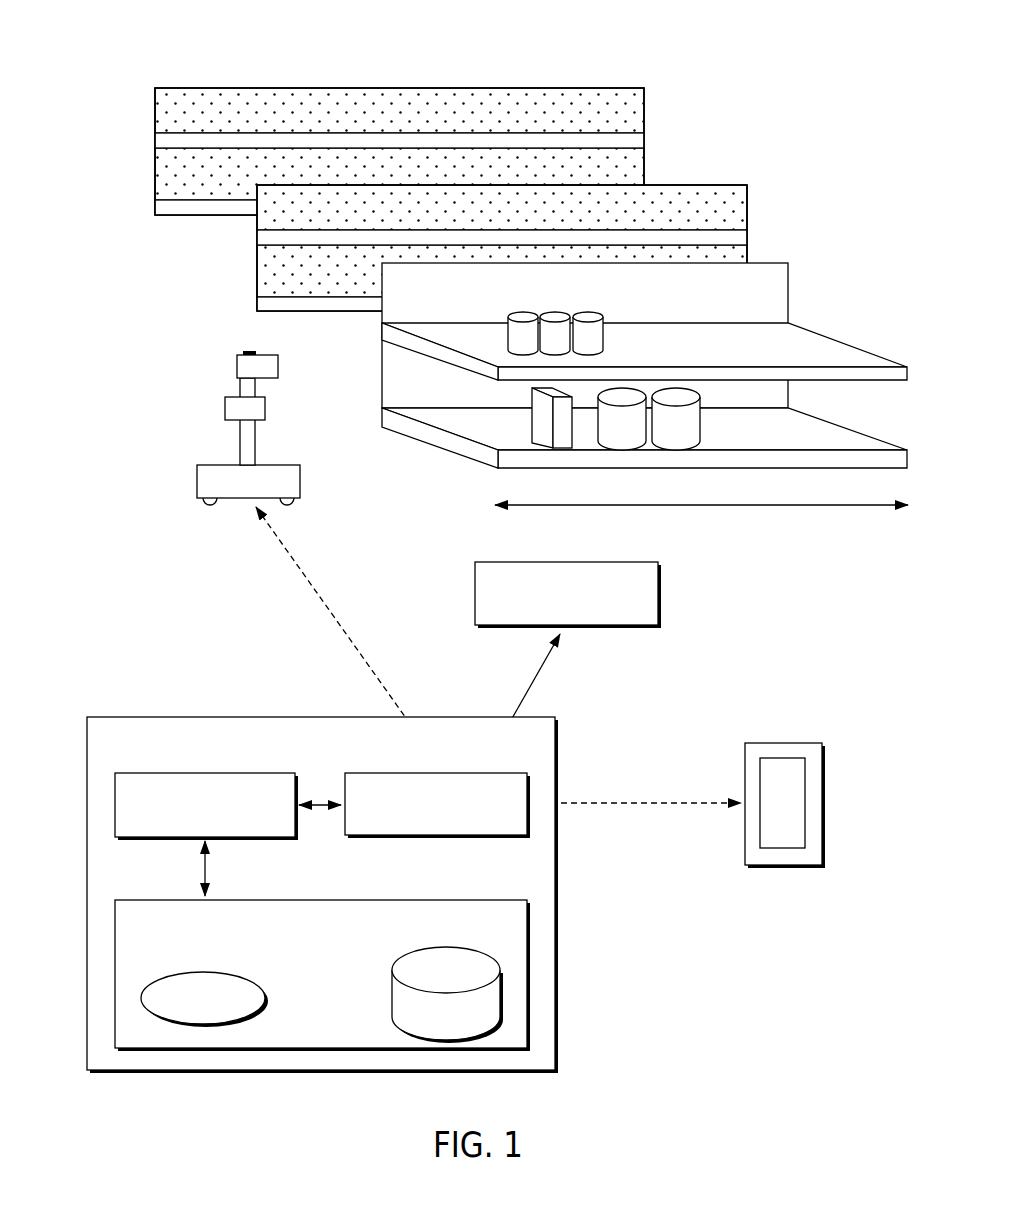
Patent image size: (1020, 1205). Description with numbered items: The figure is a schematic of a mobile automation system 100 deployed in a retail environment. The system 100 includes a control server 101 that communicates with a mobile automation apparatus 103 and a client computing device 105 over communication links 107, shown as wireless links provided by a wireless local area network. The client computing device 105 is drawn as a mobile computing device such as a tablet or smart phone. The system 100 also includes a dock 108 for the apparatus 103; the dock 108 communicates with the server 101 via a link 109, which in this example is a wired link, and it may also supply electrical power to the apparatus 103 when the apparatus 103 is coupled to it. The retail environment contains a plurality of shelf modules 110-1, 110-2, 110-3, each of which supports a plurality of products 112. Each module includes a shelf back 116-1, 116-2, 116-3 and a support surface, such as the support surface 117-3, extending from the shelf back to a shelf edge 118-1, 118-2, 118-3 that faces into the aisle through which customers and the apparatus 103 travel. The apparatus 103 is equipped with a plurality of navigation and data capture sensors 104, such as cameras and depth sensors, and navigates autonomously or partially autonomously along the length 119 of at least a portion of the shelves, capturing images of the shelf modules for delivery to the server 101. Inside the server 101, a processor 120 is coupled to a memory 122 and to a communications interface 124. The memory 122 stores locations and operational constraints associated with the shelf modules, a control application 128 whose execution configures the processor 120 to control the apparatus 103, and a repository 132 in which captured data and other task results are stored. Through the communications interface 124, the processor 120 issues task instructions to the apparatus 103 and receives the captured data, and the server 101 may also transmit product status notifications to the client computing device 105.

The mobile automation system 100 is at (770, 600).
The control server 101 is at (290, 895).
The mobile automation apparatus 103 is at (206, 428).
The navigation and data capture sensors 104 is at (237, 365).
The client computing device 105 is at (840, 743).
The communication links 107 is at (345, 636).
The dock 108 is at (475, 592).
The link 109 is at (520, 697).
The shelf module 110-1 is at (397, 147).
The shelf module 110-2 is at (501, 232).
The shelf module 110-3 is at (658, 395).
The product 112 is at (540, 432).
The shelf back 116-1 is at (635, 170).
The shelf back 116-2 is at (740, 204).
The shelf back 116-3 is at (780, 295).
The support surface 117-3 is at (840, 348).
The shelf edge 118-1 is at (160, 140).
The shelf edge 118-2 is at (262, 242).
The shelf edge 118-3 is at (843, 377).
The length 119 is at (703, 506).
The processor 120 is at (233, 840).
The memory 122 is at (276, 975).
The communications interface 124 is at (438, 838).
The control application 128 is at (185, 975).
The repository 132 is at (392, 990).